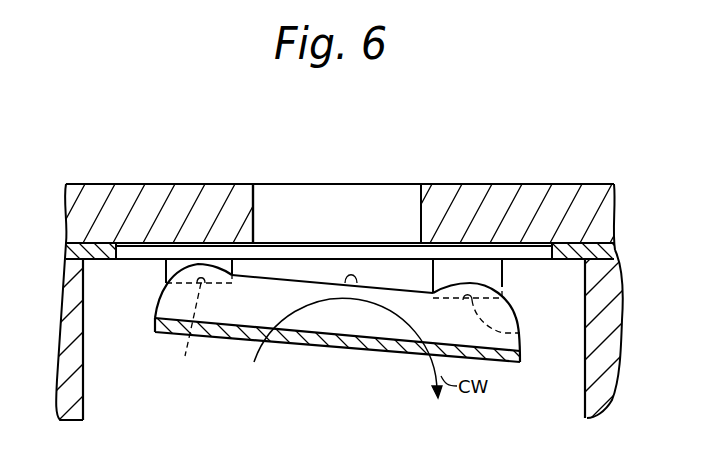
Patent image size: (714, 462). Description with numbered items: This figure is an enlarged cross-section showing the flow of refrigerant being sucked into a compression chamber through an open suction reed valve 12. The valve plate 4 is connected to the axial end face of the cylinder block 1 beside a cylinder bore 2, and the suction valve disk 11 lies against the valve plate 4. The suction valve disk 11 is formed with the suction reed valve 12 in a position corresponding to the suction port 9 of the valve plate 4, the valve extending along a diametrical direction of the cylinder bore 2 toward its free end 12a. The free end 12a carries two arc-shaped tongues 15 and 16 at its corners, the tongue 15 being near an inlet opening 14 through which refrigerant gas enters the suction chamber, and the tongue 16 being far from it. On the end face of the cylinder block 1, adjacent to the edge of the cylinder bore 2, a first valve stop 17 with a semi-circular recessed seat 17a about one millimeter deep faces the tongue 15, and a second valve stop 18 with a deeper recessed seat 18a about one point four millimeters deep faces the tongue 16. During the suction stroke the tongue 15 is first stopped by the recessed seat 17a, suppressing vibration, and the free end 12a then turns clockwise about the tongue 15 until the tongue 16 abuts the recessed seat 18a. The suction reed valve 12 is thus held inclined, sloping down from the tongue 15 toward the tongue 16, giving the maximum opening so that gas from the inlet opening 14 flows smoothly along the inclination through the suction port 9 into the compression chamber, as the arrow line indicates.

The cylinder block 1 is at (73, 408).
The cylinder bore 2 is at (85, 377).
The valve plate 4 is at (175, 192).
The suction port 9 is at (256, 202).
The suction valve disk 11 is at (100, 267).
The suction reed valve 12 is at (325, 318).
The free end 12a is at (357, 283).
The inlet opening 14 is at (375, 279).
The tongue 15 is at (166, 282).
The tongue 16 is at (500, 289).
The valve stop 17 is at (166, 261).
The recessed seat 17a is at (191, 333).
The valve stop 18 is at (500, 270).
The recessed seat 18a is at (520, 333).